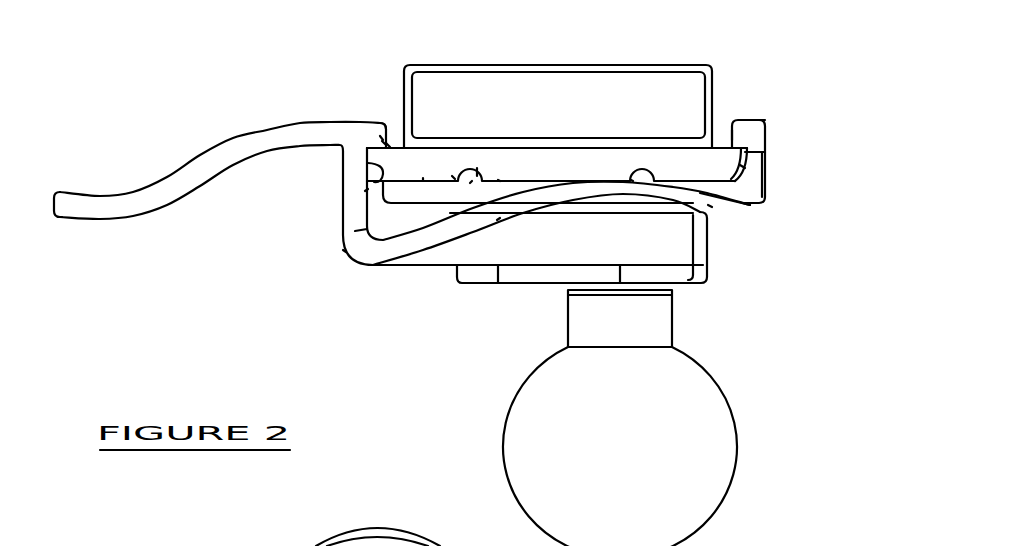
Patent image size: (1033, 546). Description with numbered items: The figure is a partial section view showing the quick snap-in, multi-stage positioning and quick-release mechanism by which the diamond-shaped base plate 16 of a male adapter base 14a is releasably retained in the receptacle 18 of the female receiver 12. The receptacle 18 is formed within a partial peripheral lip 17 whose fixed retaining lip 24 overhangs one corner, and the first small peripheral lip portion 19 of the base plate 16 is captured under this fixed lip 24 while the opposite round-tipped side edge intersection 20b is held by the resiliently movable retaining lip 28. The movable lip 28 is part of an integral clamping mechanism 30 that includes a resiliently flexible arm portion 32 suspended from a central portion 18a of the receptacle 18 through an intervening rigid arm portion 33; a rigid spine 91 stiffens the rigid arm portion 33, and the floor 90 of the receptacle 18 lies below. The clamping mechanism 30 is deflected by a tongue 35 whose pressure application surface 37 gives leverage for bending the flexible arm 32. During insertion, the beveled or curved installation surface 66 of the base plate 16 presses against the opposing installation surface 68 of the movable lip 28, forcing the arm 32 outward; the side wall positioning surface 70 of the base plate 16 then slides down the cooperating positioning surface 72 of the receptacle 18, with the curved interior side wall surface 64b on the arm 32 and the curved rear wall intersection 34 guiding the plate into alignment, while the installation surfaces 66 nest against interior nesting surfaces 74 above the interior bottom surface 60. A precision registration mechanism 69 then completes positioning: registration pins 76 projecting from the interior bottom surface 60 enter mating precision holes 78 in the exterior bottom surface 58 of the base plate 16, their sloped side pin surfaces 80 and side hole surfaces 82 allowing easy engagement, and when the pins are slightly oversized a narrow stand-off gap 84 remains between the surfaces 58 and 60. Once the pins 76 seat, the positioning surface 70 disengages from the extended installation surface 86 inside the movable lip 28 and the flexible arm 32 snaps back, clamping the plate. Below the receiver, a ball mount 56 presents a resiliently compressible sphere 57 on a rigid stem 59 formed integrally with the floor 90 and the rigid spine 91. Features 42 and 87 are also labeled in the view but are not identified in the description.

The female receiver 12 is at (767, 148).
The male adapter base 14a is at (712, 63).
The base plate 16 is at (700, 176).
The partial peripheral lip 17 is at (766, 121).
The receptacle 18 is at (578, 133).
The central portion 18a is at (556, 180).
The first peripheral lip portion 19 is at (764, 122).
The round-tipped side edge intersection 20b is at (360, 153).
The fixed retaining lip 24 is at (733, 121).
The movable retaining lip 28 is at (360, 123).
The movable clamping mechanism 30 is at (253, 118).
The resiliently flexible arm portion 32 is at (345, 250).
The intervening rigid arm portion 33 is at (497, 220).
The curved rear wall intersection 34 is at (745, 165).
The tongue 35 is at (97, 214).
The pressure application surface 37 is at (104, 197).
The hinge corner 42 is at (386, 143).
The ball mount 56 is at (767, 402).
The sphere 57 is at (608, 458).
The exterior bottom surface 58 is at (423, 178).
The rigid stem portion 59 is at (613, 327).
The interior bottom surface 60 is at (435, 184).
The curved interior side wall surface 64b is at (362, 170).
The installation surface 66 is at (368, 190).
The installation surface 68 is at (380, 136).
The precision registration mechanism 69 is at (750, 205).
The side wall positioning surface 70 is at (355, 231).
The positioning surface 72 is at (745, 152).
The interior nesting surface 74 is at (740, 183).
The precision registration pin 76 is at (473, 183).
The precision hole 78 is at (498, 180).
The side pin surface 80 is at (477, 168).
The side hole surface 82 is at (452, 176).
The stand-off gap 84 is at (607, 177).
The extended installation surface 86 is at (382, 141).
The body corner 87 is at (708, 205).
The floor 90 is at (587, 193).
The rigid spine 91 is at (540, 253).